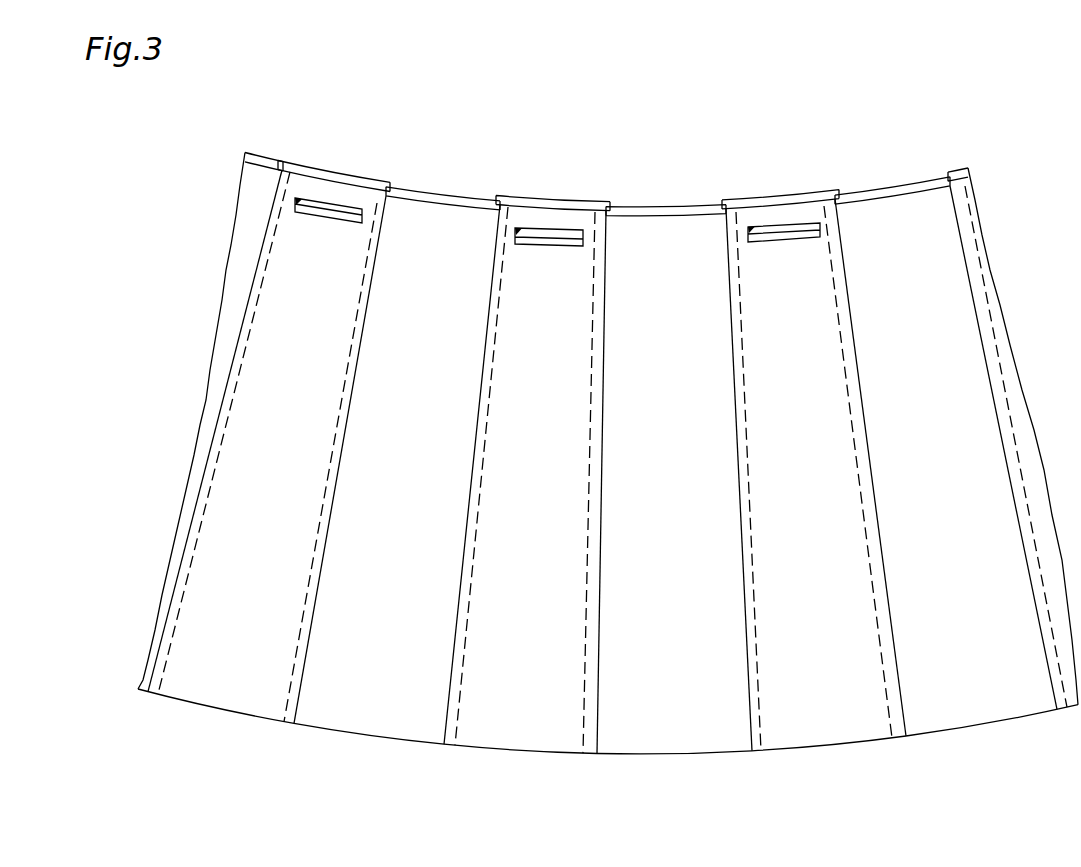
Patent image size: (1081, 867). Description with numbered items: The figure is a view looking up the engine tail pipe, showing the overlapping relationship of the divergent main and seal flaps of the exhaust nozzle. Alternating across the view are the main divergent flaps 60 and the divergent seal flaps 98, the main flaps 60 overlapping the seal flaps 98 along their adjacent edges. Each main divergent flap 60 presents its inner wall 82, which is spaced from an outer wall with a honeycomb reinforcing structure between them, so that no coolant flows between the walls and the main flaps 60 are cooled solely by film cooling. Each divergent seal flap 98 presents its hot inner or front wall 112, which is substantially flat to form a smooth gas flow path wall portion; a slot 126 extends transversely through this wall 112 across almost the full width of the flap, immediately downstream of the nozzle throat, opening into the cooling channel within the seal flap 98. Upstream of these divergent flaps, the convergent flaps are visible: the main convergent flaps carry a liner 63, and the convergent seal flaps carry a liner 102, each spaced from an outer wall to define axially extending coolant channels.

The main divergent flap 60 is at (339, 733).
The liner 63 is at (401, 188).
The inner wall 82 is at (406, 555).
The divergent seal flap 98 is at (518, 749).
The liner 102 is at (329, 172).
The inner wall 112 is at (263, 553).
The slot 126 is at (322, 217).